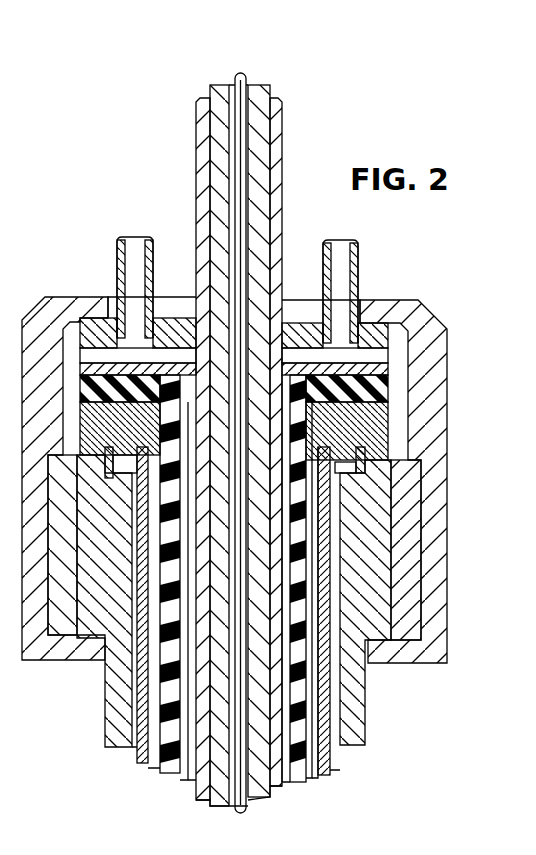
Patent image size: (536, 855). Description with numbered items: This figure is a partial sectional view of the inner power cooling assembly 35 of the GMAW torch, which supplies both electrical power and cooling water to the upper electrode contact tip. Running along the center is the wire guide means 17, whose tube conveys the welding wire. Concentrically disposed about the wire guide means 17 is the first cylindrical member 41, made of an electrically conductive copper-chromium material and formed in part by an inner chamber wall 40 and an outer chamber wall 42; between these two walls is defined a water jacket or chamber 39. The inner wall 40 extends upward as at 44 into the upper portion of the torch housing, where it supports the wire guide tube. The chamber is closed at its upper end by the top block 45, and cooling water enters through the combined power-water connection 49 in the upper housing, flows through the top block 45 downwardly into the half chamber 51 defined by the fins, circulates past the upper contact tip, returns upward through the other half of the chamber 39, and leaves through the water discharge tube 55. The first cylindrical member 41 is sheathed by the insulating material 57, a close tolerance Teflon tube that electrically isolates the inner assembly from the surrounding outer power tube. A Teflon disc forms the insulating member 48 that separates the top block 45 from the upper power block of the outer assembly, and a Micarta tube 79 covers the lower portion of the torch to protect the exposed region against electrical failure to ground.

The wire guide means 17 is at (218, 137).
The extension of inner wall 44 is at (203, 238).
The water discharge tube 55 is at (119, 237).
The combined power-water connection 49 is at (340, 242).
The top block 45 is at (301, 322).
The insulating member 48 is at (393, 388).
The half chamber 51 is at (281, 432).
The insulating material 57 is at (175, 774).
The outer chamber wall 42 is at (180, 782).
The water jacket or chamber 39 is at (190, 787).
The inner chamber wall 40 is at (198, 794).
The first cylindrical member 41 is at (271, 787).
The inner power cooling assembly 35 is at (285, 782).
The Micarta tube 79 is at (353, 702).